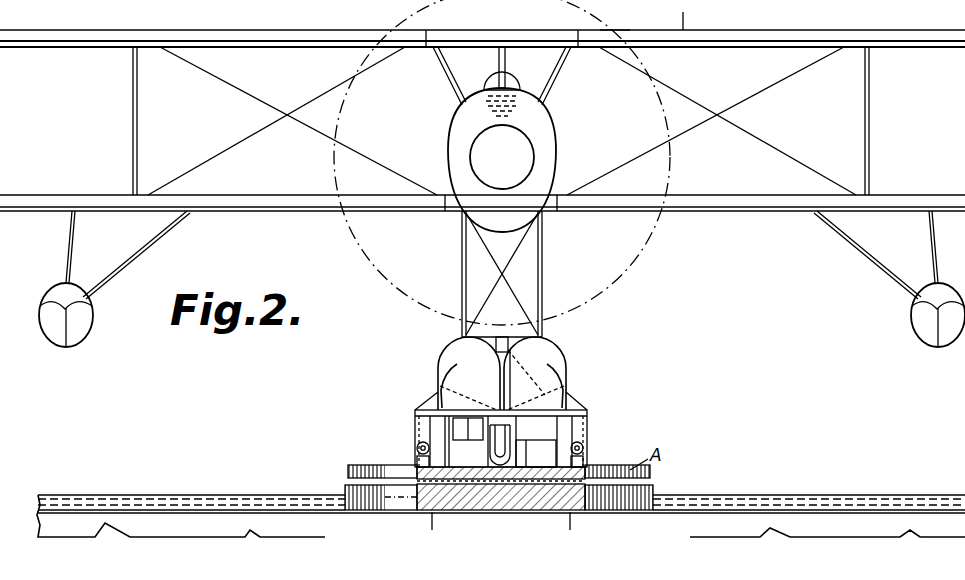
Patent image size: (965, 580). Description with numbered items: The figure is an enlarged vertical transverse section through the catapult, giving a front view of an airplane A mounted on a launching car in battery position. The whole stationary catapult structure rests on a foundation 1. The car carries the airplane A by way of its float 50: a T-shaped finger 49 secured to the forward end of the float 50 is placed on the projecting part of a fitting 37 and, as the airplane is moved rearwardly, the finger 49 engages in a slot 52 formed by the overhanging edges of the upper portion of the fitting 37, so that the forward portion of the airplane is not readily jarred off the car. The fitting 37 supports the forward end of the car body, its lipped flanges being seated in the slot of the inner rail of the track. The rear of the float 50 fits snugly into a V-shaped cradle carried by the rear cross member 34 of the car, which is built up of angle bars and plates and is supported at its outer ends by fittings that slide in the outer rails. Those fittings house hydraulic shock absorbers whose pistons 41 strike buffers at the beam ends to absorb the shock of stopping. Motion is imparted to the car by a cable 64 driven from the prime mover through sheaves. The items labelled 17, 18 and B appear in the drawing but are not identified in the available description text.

The foundation 1 is at (336, 530).
The wing strut fitting 17 is at (683, 15).
The wing strut fitting 18 is at (580, 2).
The rear cross member 34 is at (567, 413).
The fitting 37 is at (488, 452).
The pistons 41 is at (416, 448).
The T-shaped finger 49 is at (479, 396).
The float 50 is at (537, 351).
The slot 52 is at (536, 453).
The cable 64 is at (482, 436).
The airplane A is at (482, 176).
The lower guide rail B is at (642, 492).